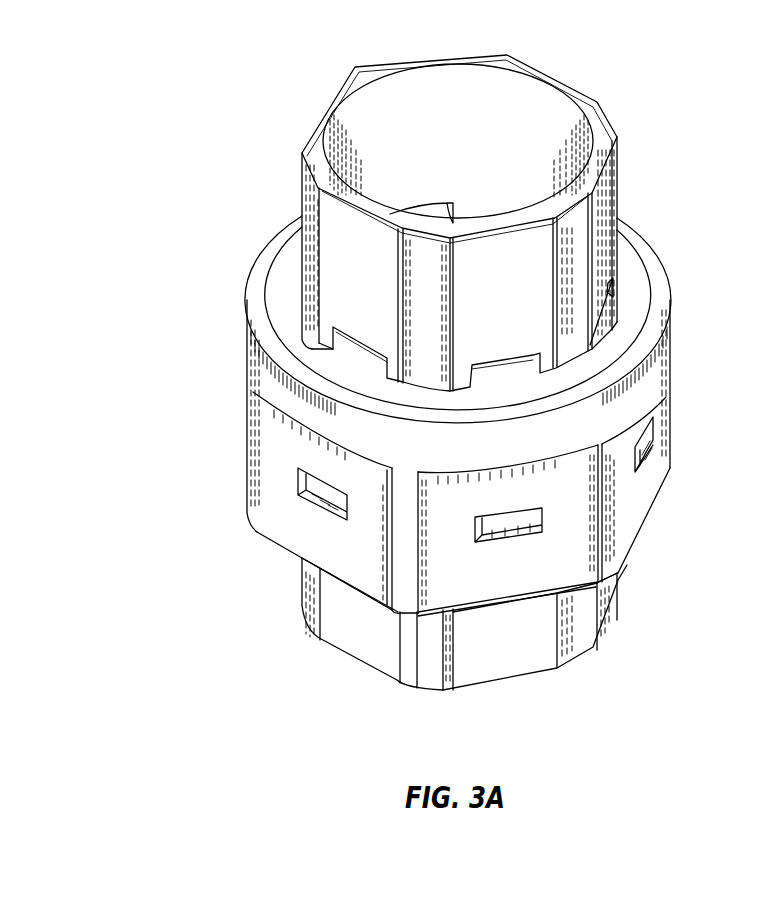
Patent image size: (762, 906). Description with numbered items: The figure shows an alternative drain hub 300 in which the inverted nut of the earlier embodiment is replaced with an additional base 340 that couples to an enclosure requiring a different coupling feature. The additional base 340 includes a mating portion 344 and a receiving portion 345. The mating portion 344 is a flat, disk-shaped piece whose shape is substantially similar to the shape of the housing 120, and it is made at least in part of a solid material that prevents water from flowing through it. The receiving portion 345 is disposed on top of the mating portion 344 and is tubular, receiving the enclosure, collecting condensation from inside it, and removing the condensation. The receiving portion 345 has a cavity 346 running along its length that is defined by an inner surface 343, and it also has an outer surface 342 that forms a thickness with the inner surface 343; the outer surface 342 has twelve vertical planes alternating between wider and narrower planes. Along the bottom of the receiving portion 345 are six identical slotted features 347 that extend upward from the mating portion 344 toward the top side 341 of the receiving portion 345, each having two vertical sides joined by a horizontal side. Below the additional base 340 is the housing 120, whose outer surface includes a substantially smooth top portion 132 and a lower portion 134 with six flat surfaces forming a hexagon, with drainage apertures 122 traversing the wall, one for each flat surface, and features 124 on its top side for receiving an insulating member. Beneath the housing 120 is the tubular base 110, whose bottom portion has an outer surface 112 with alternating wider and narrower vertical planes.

The drain hub 300 is at (298, 734).
The additional base 340 is at (260, 170).
The top side 341 is at (320, 126).
The outer surface 342 is at (382, 293).
The inner surface 343 is at (480, 154).
The mating portion 344 is at (287, 268).
The receiving portion 345 is at (625, 104).
The cavity 346 is at (468, 80).
The slotted features 347 is at (457, 208).
The housing 120 is at (220, 550).
The drainage apertures 122 is at (653, 428).
The features 124 is at (648, 262).
The top portion 132 is at (673, 335).
The lower portion 134 is at (641, 486).
The base 110 is at (338, 660).
The outer surface 112 is at (527, 650).